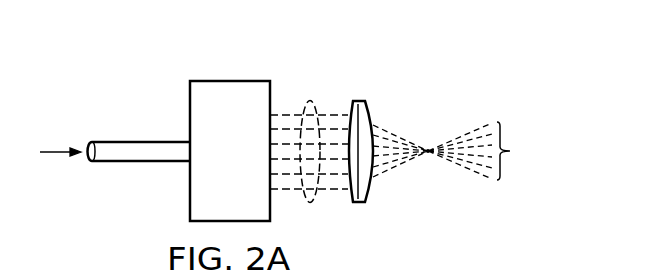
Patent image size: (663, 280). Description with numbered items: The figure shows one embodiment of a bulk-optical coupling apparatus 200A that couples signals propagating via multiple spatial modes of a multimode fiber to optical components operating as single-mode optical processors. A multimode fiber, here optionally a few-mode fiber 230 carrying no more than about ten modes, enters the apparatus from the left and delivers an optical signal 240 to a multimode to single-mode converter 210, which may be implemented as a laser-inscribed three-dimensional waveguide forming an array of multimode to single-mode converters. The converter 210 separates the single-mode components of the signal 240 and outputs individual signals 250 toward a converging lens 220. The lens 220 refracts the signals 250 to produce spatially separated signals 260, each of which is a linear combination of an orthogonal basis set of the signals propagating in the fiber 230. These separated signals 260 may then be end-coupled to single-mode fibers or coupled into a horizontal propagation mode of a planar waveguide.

The bulk-optical coupling apparatus 200A is at (139, 64).
The multimode to single-mode converter 210 is at (250, 163).
The converging lens 220 is at (357, 100).
The few-mode fiber 230 is at (140, 162).
The optical signal 240 is at (58, 150).
The individual signals 250 is at (312, 198).
The spatially separated signals 260 is at (491, 151).